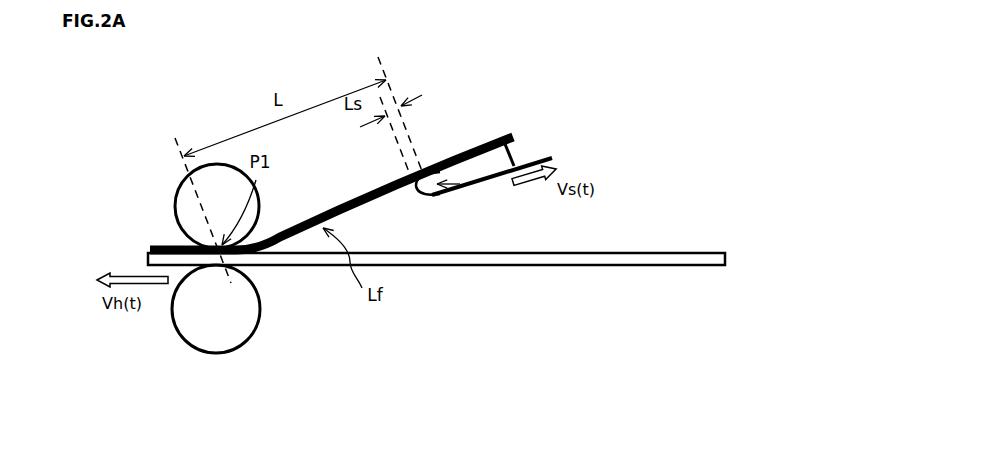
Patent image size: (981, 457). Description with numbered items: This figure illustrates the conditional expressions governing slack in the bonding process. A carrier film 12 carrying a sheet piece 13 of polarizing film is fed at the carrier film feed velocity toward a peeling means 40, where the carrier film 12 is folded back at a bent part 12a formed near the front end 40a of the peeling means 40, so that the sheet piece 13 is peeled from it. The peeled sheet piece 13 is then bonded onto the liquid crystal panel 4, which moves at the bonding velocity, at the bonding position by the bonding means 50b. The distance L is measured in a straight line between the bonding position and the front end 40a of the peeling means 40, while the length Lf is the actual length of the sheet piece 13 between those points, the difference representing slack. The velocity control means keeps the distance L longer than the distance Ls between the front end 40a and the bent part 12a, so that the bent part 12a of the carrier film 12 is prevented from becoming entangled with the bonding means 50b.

The liquid crystal panel 4 is at (540, 267).
The carrier film 12 is at (520, 163).
The bent part 12a is at (416, 192).
The sheet piece 13 is at (345, 201).
The peeling means 40 is at (507, 146).
The front end of peeling means 40a is at (460, 184).
The bonding means 50b is at (208, 338).